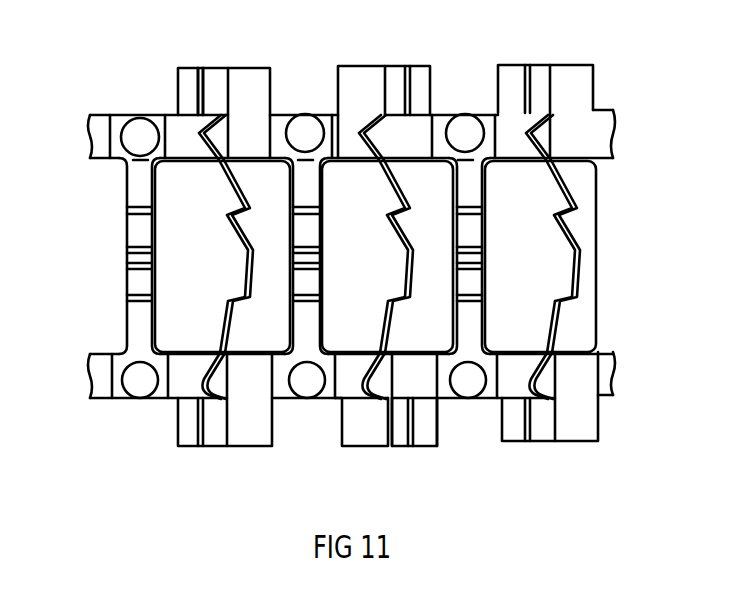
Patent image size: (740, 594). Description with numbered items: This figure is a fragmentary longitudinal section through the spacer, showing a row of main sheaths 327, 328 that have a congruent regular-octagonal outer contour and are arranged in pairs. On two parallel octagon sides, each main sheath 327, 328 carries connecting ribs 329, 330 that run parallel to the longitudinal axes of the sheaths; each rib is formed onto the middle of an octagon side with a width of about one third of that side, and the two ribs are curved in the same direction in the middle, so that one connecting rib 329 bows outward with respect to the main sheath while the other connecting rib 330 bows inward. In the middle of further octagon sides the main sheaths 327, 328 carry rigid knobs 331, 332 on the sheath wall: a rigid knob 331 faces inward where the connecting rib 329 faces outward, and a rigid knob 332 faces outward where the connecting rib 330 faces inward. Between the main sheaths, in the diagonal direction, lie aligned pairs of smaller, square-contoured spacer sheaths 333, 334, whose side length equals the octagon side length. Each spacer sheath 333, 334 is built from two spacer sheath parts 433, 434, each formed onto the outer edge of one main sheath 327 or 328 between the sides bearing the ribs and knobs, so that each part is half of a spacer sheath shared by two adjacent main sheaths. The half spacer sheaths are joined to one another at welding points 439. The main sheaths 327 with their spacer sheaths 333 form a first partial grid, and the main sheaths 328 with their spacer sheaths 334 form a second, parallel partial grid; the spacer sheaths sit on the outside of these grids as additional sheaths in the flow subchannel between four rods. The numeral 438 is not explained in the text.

The main sheath 327 is at (261, 130).
The main sheath 328 is at (271, 378).
The connecting rib 329 is at (152, 237).
The connecting rib 330 is at (238, 278).
The rigid knob 331 is at (137, 137).
The rigid knob 332 is at (205, 133).
The spacer sheath 333 is at (213, 77).
The spacer sheath 334 is at (217, 436).
The spacer sheath part 433 is at (204, 97).
The spacer sheath part 434 is at (398, 428).
The rod 438 is at (186, 440).
The welding point 439 is at (216, 100).